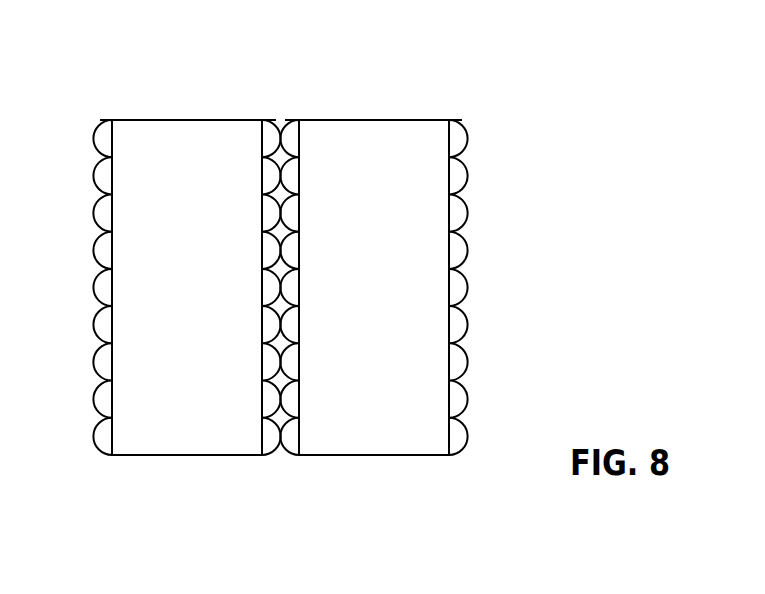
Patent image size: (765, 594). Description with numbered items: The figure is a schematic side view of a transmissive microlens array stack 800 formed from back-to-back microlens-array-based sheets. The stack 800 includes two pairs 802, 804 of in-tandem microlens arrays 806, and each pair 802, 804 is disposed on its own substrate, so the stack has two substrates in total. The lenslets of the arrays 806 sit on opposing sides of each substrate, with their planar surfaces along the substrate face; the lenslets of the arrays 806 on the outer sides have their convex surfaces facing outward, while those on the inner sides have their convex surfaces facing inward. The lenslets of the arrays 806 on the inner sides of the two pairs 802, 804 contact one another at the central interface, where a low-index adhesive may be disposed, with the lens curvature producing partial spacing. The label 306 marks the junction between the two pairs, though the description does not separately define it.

The transmissive microlens array stack 800 is at (465, 47).
The first pair of in-tandem microlens arrays 802 is at (165, 319).
The second pair of in-tandem microlens arrays 804 is at (395, 319).
The microlens array 806 is at (103, 113).
The hinge joint 306 is at (267, 113).